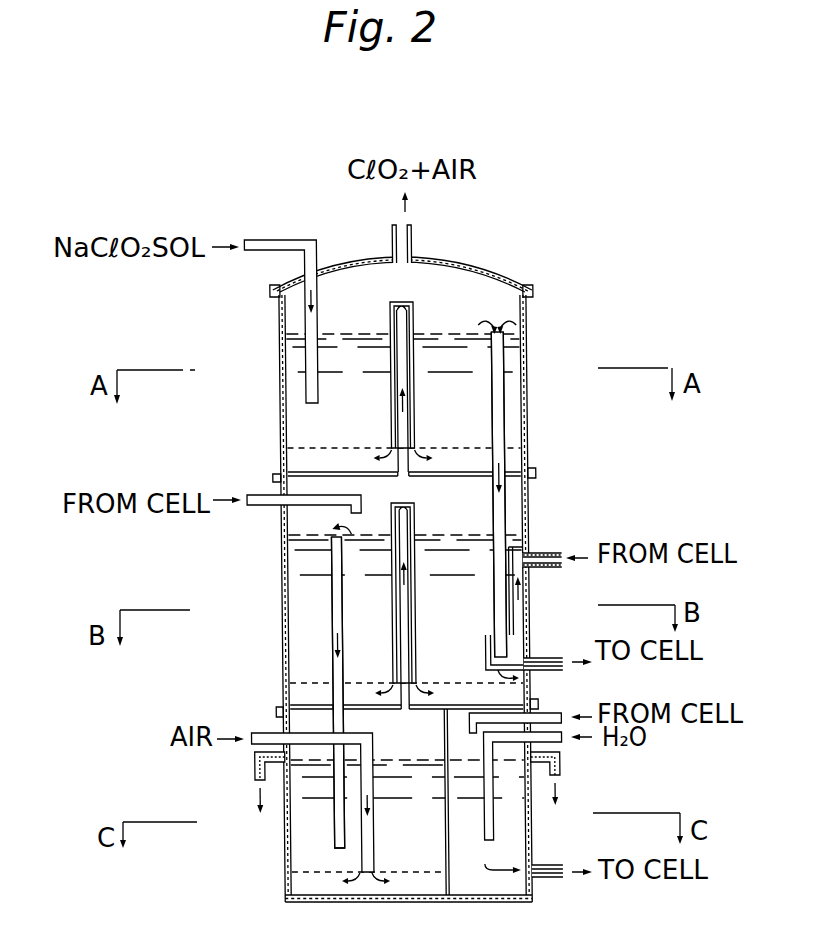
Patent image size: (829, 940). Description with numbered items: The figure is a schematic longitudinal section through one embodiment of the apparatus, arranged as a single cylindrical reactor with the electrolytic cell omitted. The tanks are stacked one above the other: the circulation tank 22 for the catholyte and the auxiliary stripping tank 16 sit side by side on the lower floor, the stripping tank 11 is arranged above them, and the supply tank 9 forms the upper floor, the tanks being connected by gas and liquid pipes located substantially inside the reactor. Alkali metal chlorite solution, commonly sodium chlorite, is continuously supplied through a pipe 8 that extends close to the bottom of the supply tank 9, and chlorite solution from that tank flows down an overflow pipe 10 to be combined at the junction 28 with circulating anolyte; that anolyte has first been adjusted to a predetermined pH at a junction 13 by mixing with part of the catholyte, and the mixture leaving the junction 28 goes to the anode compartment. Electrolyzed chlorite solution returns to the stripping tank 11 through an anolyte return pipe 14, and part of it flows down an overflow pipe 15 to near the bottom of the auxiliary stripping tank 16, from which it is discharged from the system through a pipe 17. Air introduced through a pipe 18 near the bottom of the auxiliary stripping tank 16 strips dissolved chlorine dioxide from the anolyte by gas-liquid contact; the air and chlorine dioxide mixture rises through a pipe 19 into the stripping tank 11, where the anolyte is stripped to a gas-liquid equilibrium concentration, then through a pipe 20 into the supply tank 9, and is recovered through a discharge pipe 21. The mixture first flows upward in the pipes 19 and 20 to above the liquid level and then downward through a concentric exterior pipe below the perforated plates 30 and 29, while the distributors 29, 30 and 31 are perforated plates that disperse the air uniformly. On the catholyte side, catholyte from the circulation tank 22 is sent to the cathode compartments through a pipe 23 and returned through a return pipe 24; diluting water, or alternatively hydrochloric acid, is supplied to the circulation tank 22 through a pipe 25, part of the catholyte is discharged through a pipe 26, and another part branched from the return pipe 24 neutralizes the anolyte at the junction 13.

The pipe 8 is at (267, 252).
The supply tank 9 is at (298, 390).
The overflow pipe 10 is at (520, 386).
The stripping tank 11 is at (320, 588).
The junction 13 is at (531, 550).
The anolyte return pipe 14 is at (264, 492).
The overflow pipe 15 is at (343, 643).
The auxiliary stripping tank 16 is at (308, 848).
The pipe 17 is at (252, 764).
The pipe 18 is at (262, 729).
The pipe 19 is at (415, 606).
The pipe 20 is at (417, 397).
The discharge pipe 21 is at (418, 239).
The circulation tank 22 is at (478, 877).
The pipe 23 is at (545, 877).
The return pipe 24 is at (541, 706).
The pipe 25 is at (485, 812).
The pipe 26 is at (557, 765).
The junction 28 is at (523, 670).
The distributor 29 is at (321, 450).
The distributor 30 is at (357, 683).
The distributor 31 is at (390, 874).